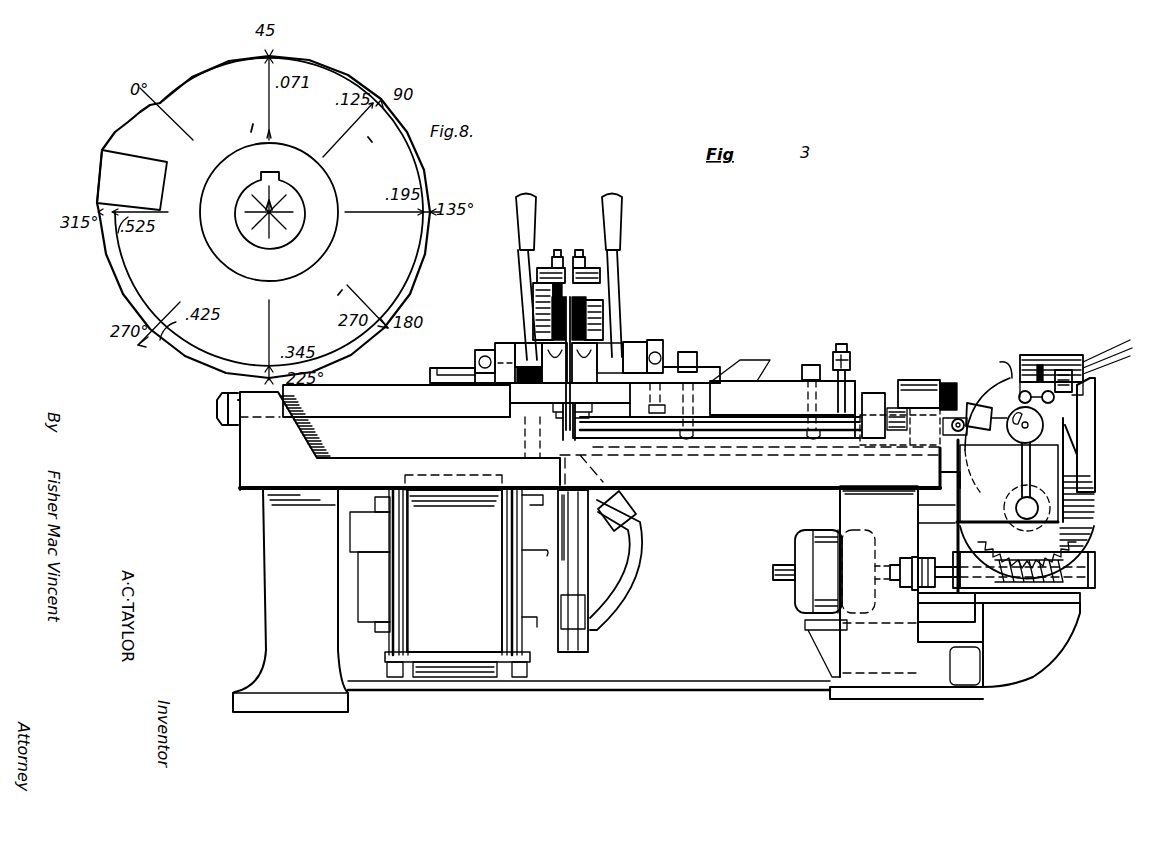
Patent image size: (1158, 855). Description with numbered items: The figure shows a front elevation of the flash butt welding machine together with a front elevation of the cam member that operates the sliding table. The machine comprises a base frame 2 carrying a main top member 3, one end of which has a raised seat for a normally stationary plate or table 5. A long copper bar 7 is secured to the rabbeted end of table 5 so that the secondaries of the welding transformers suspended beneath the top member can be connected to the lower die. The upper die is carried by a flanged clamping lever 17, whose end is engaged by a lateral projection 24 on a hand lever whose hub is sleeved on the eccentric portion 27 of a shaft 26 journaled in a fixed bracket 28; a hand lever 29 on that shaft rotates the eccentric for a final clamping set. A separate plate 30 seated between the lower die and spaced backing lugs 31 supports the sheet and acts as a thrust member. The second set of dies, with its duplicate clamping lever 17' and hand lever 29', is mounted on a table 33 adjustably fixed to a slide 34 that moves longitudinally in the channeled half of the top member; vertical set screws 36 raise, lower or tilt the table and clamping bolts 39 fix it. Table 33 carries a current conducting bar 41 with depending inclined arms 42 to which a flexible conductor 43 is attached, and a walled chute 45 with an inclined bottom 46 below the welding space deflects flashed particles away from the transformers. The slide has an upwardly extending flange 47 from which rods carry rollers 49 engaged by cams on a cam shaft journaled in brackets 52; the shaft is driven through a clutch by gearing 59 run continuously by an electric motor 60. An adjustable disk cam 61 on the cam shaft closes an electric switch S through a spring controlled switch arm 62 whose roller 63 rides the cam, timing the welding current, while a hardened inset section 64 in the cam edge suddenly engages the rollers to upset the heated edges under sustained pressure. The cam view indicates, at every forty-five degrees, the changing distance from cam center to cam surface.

In FIG. 3, the base frame 2 is at (290, 601).
In FIG. 3, the main top member 3 is at (580, 441).
In FIG. 8, the normally stationary plate or table 5 is at (263, 223).
In FIG. 3, the long copper bar 7 is at (515, 405).
In FIG. 3, the clamping lever 17 is at (526, 316).
In FIG. 3, the clamping lever 17' is at (614, 316).
In FIG. 3, the lateral projection 24 is at (531, 295).
In FIG. 3, the shaft 26 is at (472, 355).
In FIG. 3, the eccentric portion 27 is at (520, 355).
In FIG. 3, the fixed bracket 28 is at (503, 383).
In FIG. 3, the hand lever 29 is at (496, 300).
In FIG. 3, the hand lever 29' is at (630, 276).
In FIG. 3, the thrust member plate 30 is at (440, 368).
In FIG. 3, the backing lugs 31 is at (425, 377).
In FIG. 3, the table 33 is at (782, 386).
In FIG. 3, the slide 34 is at (730, 425).
In FIG. 3, the vertical set screws 36 is at (841, 344).
In FIG. 3, the clamping bolts 39 is at (700, 353).
In FIG. 3, the current conducting bar 41 is at (586, 406).
In FIG. 3, the inclined arms 42 is at (622, 518).
In FIG. 3, the flexible conductor 43 is at (672, 560).
In FIG. 3, the walled chute 45 is at (582, 575).
In FIG. 3, the inclined bottom 46 is at (580, 643).
In FIG. 3, the upwardly-extending flange 47 is at (866, 393).
In FIG. 3, the rollers 49 is at (1007, 483).
In FIG. 3, the brackets 52 is at (1009, 487).
In FIG. 3, the gearing 59 is at (1027, 527).
In FIG. 3, the electric motor 60 is at (798, 555).
In FIG. 3, the adjustable disk cam 61 is at (1018, 443).
In FIG. 3, the spring-controlled switch arm 62 is at (1033, 345).
In FIG. 3, the roller 63 is at (988, 417).
In FIG. 3, the hardened inset section 64 is at (975, 402).
In FIG. 3, the electric switch S is at (1062, 345).